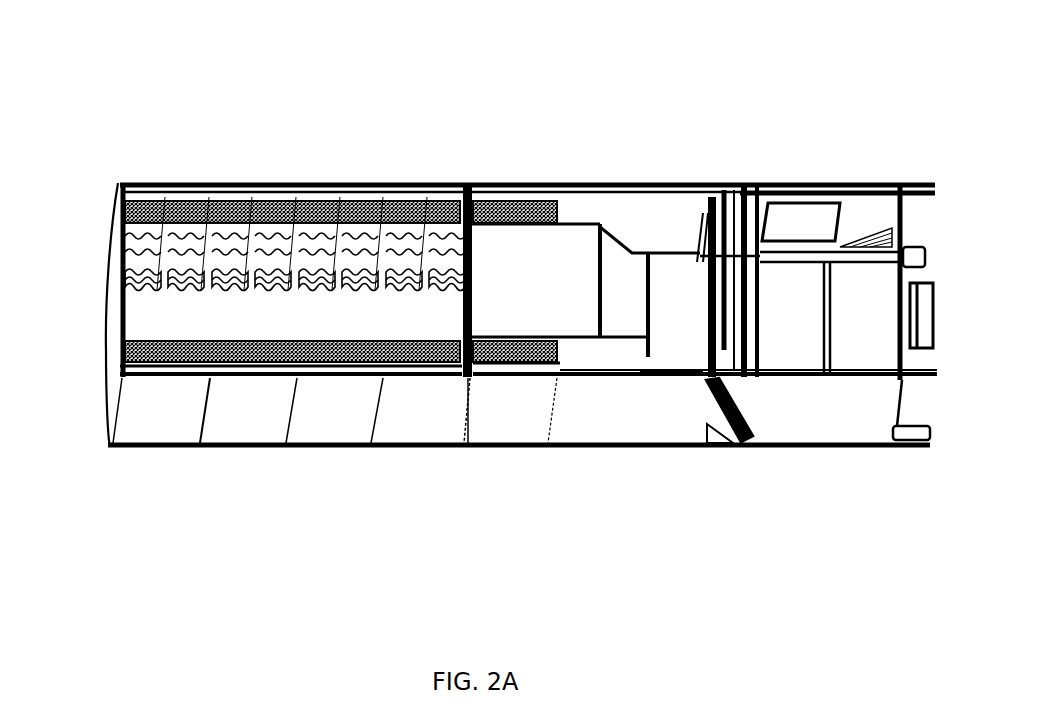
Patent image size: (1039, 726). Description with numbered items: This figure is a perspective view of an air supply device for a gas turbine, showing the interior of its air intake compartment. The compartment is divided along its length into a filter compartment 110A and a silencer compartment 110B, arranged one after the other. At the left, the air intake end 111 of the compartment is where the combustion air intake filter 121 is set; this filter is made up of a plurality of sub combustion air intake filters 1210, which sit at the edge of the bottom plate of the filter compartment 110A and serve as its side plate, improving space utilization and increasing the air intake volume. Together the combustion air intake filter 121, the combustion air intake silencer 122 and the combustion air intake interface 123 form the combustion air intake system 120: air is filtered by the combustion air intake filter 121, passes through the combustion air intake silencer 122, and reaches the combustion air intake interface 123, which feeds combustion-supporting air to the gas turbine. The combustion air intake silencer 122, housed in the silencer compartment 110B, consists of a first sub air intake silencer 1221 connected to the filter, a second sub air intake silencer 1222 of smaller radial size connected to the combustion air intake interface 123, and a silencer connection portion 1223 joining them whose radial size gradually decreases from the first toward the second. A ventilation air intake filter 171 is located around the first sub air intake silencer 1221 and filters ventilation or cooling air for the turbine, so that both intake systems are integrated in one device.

The filter compartment 110A is at (223, 322).
The silencer compartment 110B is at (653, 438).
The air intake end 111 is at (143, 180).
The combustion air intake system 120 is at (341, 220).
The combustion air intake filter 121 is at (295, 177).
The sub combustion air intake filter 1210 is at (143, 280).
The combustion air intake silencer 122 is at (679, 269).
The first sub air intake silencer 1221 is at (515, 242).
The second sub air intake silencer 1222 is at (677, 330).
The silencer connection portion 1223 is at (619, 256).
The combustion air intake interface 123 is at (722, 248).
The ventilation air intake filter 171 is at (515, 422).